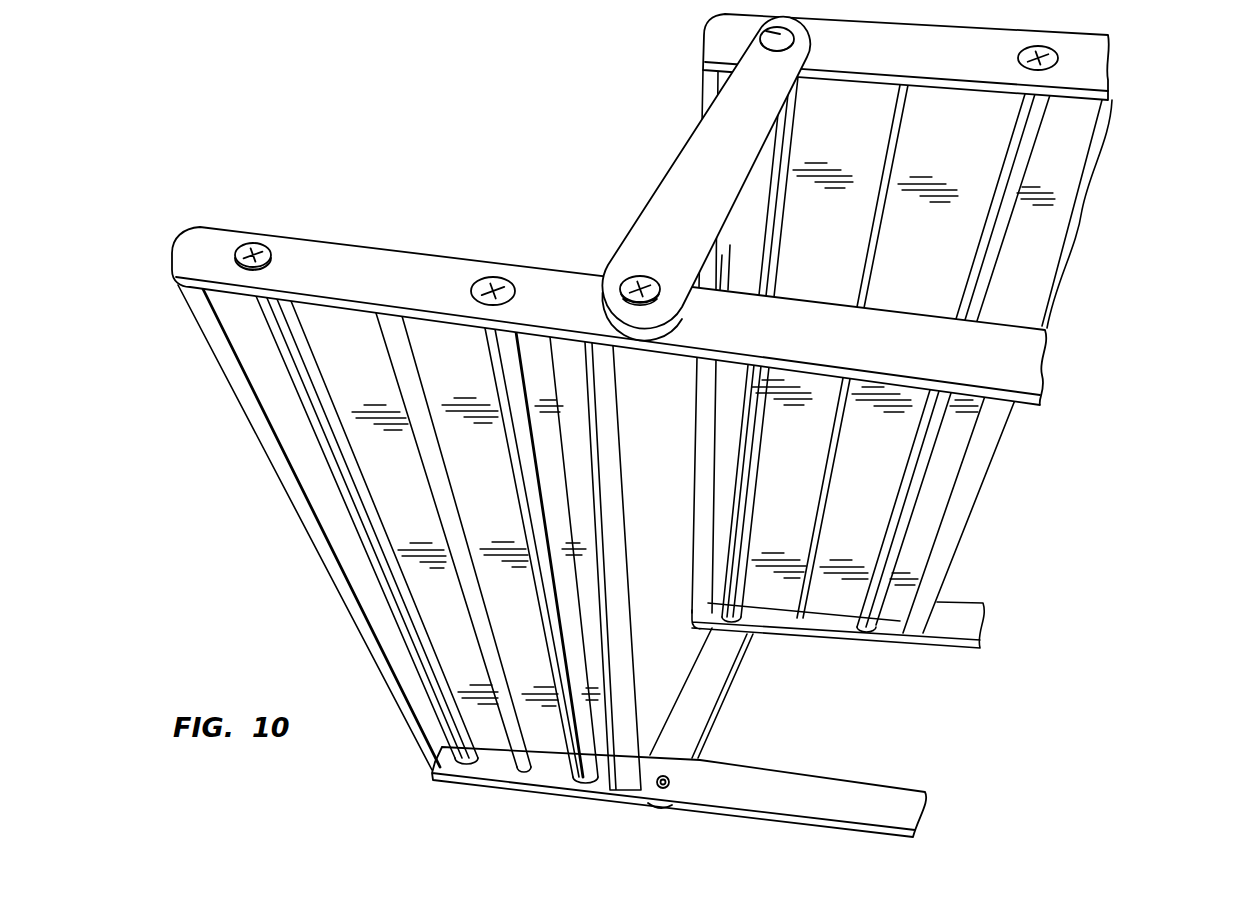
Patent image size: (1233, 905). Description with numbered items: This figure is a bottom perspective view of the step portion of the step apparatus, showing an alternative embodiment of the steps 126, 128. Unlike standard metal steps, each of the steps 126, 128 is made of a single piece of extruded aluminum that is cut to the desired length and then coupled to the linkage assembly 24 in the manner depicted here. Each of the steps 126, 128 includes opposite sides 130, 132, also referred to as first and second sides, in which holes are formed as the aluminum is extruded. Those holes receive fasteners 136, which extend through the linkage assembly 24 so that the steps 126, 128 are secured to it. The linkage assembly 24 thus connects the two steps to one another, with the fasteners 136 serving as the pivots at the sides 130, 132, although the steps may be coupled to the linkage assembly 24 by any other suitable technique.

The linkage assembly 24 is at (640, 195).
The step 126 is at (1092, 60).
The step 128 is at (422, 262).
The side 130 is at (486, 798).
The side 132 is at (357, 228).
The fastener 136 is at (246, 242).